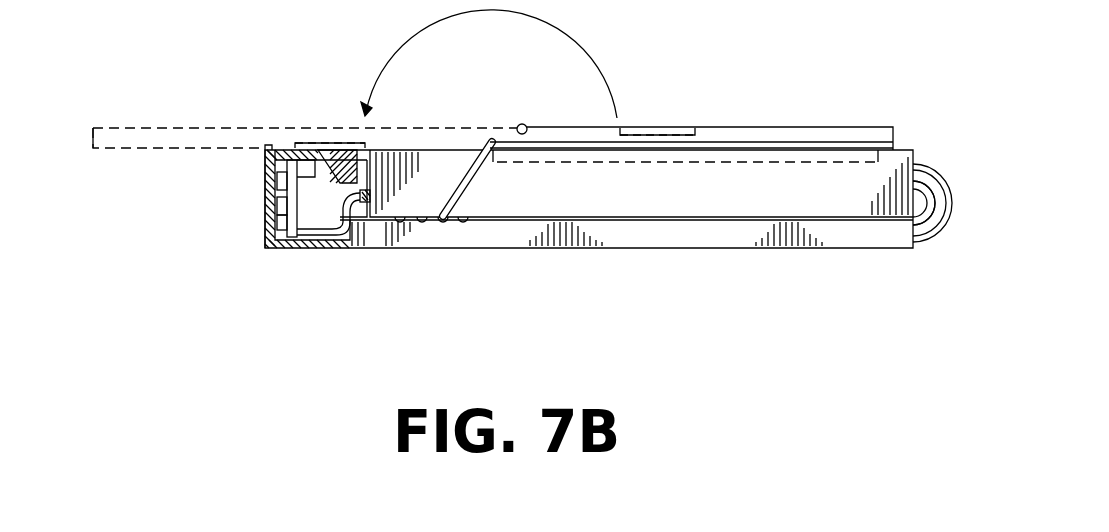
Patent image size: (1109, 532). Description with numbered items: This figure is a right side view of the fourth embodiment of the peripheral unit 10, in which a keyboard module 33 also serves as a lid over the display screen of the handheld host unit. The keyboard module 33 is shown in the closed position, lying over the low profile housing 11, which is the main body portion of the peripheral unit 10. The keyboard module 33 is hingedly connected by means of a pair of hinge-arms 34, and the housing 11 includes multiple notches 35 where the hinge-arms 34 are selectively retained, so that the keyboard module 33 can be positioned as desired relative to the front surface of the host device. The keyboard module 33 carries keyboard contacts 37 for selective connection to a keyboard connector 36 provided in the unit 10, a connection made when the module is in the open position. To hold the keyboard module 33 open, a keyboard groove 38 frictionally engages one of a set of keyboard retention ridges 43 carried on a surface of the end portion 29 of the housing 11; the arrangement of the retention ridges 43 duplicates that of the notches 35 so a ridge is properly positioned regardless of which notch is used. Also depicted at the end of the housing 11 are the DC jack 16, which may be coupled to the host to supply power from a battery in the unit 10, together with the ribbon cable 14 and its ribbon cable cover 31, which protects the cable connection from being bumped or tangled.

The peripheral unit 10 is at (530, 186).
The housing 11 is at (662, 232).
The ribbon cable 14 is at (930, 185).
The DC jack 16 is at (325, 231).
The end portion 29 is at (307, 205).
The ribbon cable cover 31 is at (948, 215).
The keyboard module 33 is at (737, 127).
The hinge-arms 34 is at (468, 192).
The notches 35 is at (405, 240).
The keyboard connector 36 is at (326, 160).
The keyboard contacts 37 is at (650, 127).
The keyboard groove 38 is at (523, 124).
The keyboard retention ridges 43 is at (272, 147).